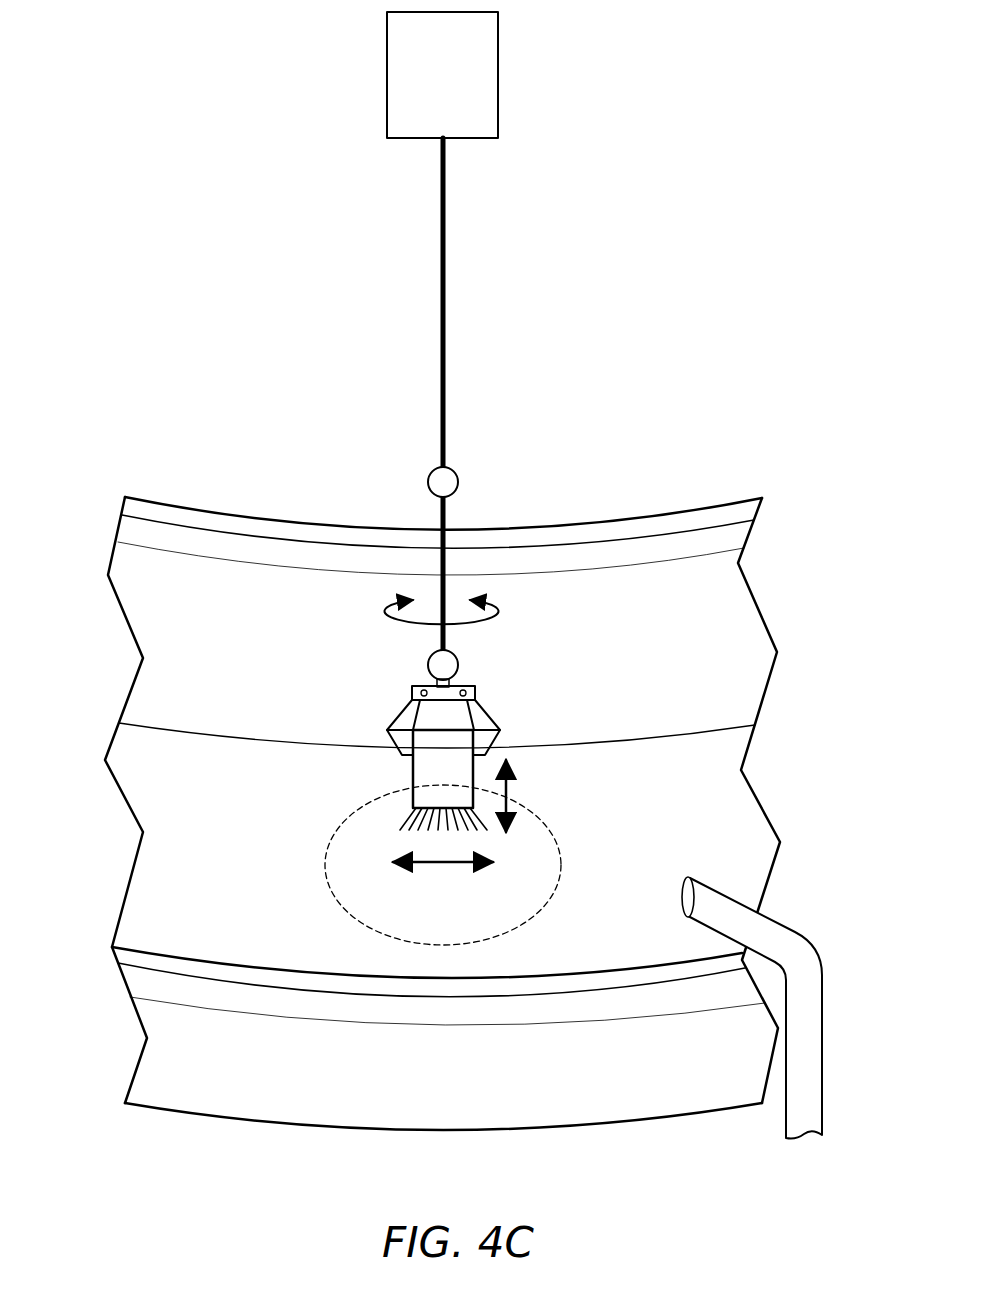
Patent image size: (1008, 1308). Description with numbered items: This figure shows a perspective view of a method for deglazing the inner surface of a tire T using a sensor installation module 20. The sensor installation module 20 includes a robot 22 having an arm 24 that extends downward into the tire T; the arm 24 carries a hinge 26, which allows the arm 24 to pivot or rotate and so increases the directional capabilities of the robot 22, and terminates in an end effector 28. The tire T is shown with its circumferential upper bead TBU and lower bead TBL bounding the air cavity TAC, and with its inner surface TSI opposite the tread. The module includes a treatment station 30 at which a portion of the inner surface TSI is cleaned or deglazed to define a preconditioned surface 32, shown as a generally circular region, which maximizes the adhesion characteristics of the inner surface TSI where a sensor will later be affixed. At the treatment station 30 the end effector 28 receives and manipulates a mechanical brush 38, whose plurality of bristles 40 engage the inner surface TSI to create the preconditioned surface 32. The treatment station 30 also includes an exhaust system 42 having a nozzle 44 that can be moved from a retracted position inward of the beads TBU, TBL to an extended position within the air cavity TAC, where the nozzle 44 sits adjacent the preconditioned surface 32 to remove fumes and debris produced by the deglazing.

The sensor installation module 20 is at (204, 78).
The robot 22 is at (506, 38).
The arm 24 is at (447, 262).
The hinge 26 is at (459, 478).
The end effector 28 is at (488, 712).
The treatment station 30 is at (295, 453).
The preconditioned surface 32 is at (560, 860).
The mechanical brush 38 is at (408, 777).
The bristles 40 is at (405, 808).
The exhaust system 42 is at (751, 1008).
The nozzle 44 is at (683, 903).
The tire T is at (232, 1127).
The upper bead TBU is at (182, 497).
The air cavity TAC is at (183, 810).
The lower bead TBL is at (150, 945).
The inner surface TSI is at (249, 903).